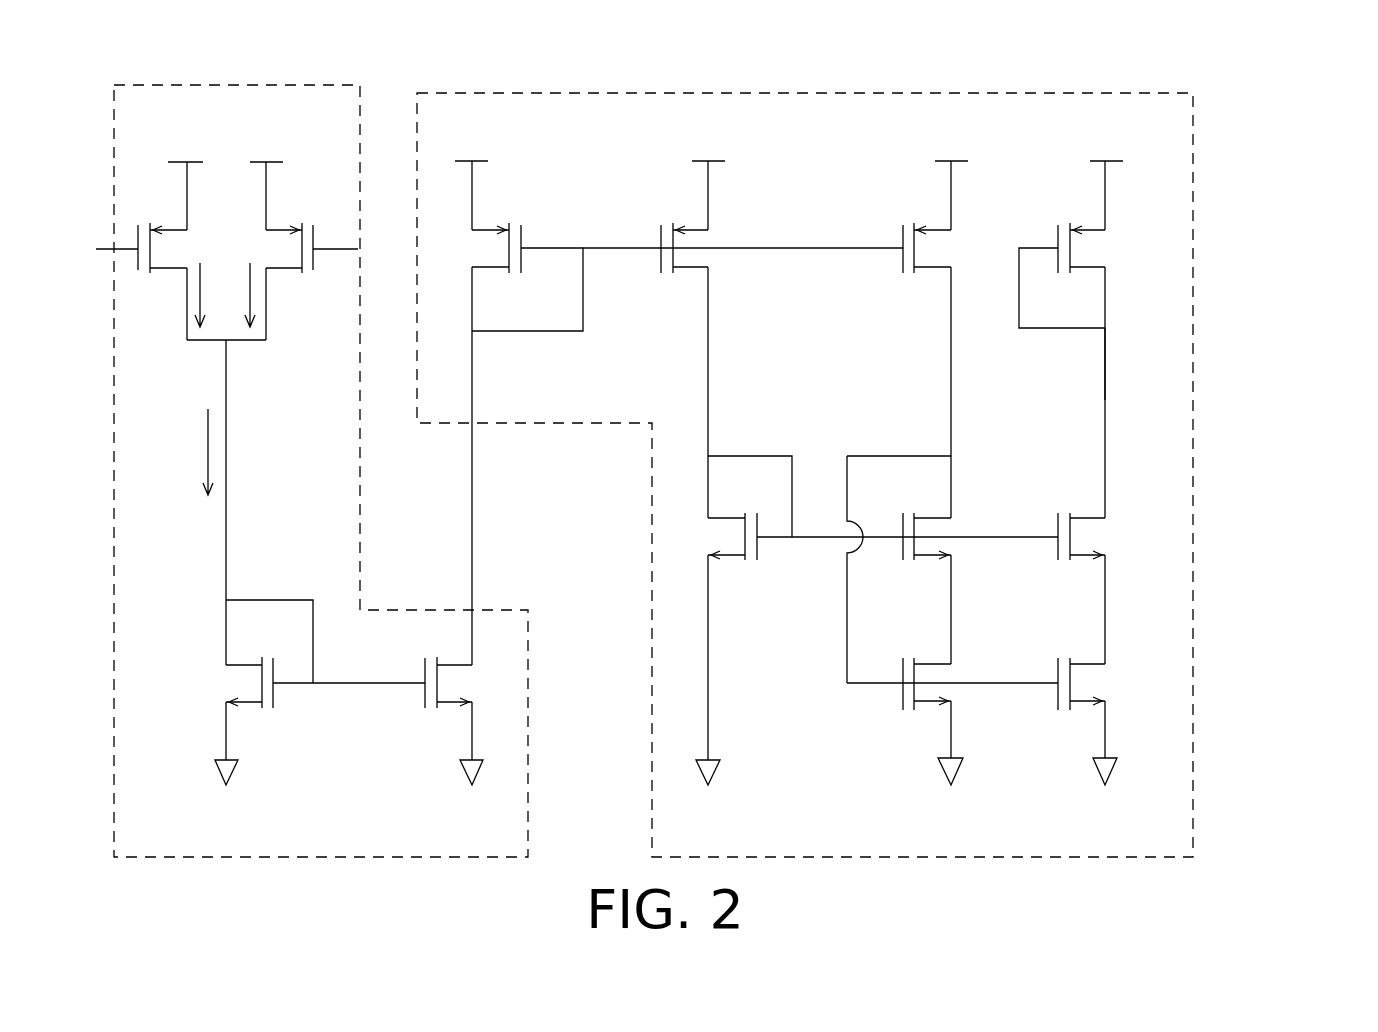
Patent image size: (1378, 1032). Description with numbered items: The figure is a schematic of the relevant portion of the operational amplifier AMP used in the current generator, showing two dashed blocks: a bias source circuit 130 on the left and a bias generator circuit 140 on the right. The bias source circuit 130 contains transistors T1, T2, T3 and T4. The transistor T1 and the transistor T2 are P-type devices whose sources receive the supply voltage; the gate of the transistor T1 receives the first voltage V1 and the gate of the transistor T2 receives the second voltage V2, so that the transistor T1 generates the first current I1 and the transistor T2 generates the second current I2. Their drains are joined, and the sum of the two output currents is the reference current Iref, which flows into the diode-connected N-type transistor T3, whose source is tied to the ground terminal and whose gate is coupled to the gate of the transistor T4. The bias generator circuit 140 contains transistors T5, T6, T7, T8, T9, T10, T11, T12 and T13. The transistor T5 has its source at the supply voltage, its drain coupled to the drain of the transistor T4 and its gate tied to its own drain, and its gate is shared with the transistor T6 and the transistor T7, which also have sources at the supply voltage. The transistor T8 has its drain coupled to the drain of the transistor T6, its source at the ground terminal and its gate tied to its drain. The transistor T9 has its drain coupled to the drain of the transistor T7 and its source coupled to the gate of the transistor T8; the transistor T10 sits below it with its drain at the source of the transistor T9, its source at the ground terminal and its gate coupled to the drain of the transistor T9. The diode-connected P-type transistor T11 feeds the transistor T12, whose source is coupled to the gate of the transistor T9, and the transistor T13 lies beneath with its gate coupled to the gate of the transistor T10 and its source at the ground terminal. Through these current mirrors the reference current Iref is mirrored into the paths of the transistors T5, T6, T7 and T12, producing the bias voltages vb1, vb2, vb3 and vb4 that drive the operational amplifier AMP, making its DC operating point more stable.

The bias source circuit 130 is at (114, 637).
The bias generator circuit 140 is at (1193, 560).
The operational amplifier AMP is at (1233, 98).
The transistor T1 is at (160, 281).
The transistor T2 is at (296, 281).
The transistor T3 is at (255, 721).
The transistor T4 is at (444, 526).
The transistor T5 is at (527, 263).
The transistor T6 is at (707, 359).
The transistor T7 is at (948, 370).
The transistor T8 is at (734, 649).
The transistor T9 is at (918, 588).
The transistor T10 is at (924, 721).
The transistor T11 is at (1089, 370).
The transistor T12 is at (1069, 588).
The transistor T13 is at (1079, 721).
The first voltage V1 is at (99, 248).
The second voltage V2 is at (354, 248).
The first current I1 is at (202, 281).
The second current I2 is at (249, 281).
The reference current Iref is at (187, 452).
The bias voltage vb1 is at (743, 233).
The bias voltage vb2 is at (751, 482).
The bias voltage vb3 is at (899, 555).
The bias voltage vb4 is at (1080, 364).